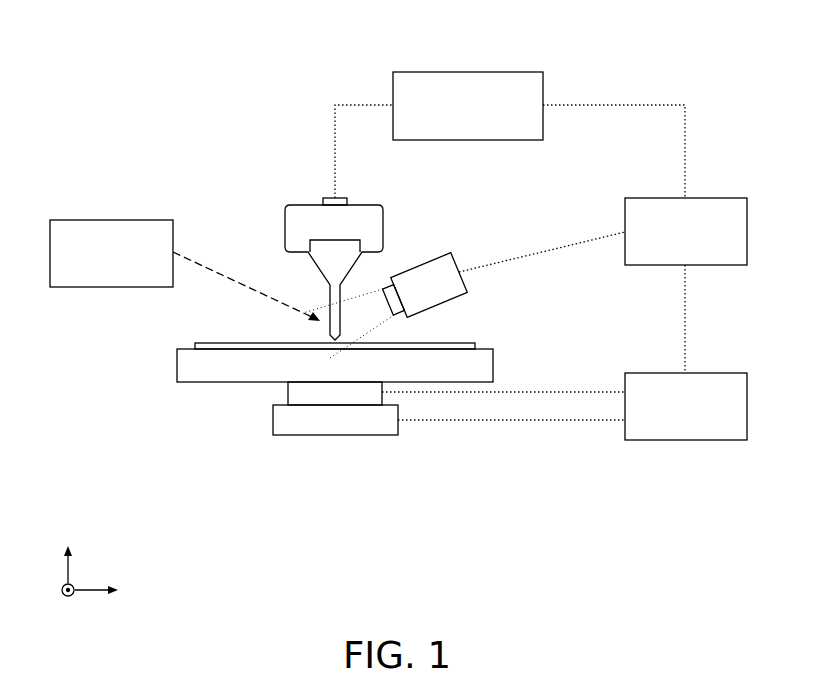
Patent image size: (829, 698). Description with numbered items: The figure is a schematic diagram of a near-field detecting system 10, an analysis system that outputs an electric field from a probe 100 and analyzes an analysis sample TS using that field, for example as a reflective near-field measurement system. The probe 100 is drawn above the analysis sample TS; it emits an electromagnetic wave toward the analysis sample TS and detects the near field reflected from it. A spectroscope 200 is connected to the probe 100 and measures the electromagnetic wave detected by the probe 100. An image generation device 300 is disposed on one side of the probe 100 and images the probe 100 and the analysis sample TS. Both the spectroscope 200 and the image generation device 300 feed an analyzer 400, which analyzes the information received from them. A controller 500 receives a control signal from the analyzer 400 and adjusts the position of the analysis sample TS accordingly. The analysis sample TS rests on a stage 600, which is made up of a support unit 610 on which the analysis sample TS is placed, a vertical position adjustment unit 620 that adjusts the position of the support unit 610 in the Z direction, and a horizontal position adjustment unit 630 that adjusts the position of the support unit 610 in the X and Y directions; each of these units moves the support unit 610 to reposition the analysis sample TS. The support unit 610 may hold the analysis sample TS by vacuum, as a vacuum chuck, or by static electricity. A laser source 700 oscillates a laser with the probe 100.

The near-field detecting system 10 is at (285, 24).
The probe 100 is at (275, 248).
The spectroscope 200 is at (520, 72).
The image generation device 300 is at (428, 262).
The analyzer 400 is at (722, 198).
The controller 500 is at (722, 373).
The stage 600 is at (335, 437).
The support unit 610 is at (230, 372).
The vertical position adjustment unit 620 is at (312, 393).
The horizontal position adjustment unit 630 is at (335, 449).
The laser source 700 is at (150, 220).
The analysis sample TS is at (472, 343).